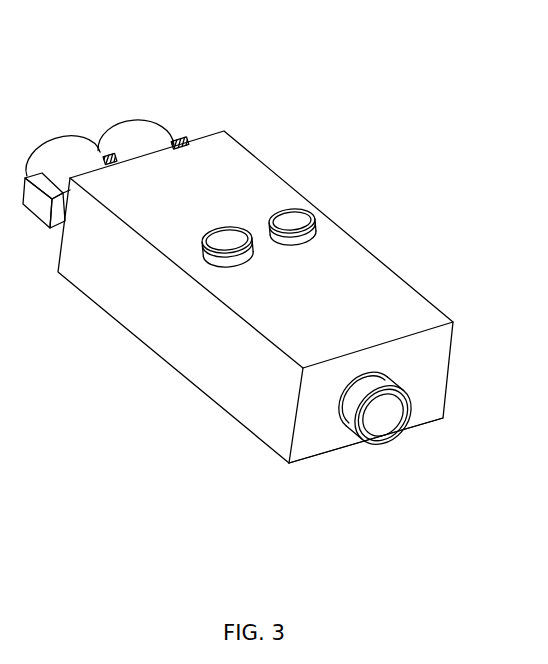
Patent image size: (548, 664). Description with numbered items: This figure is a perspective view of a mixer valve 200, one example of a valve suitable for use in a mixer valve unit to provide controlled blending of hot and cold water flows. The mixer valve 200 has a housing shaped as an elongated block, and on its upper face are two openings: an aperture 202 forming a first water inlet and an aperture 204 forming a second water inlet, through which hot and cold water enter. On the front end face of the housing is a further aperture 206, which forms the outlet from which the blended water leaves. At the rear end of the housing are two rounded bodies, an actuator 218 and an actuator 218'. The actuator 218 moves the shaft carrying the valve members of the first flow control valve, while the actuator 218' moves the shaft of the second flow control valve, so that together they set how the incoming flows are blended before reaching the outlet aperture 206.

The mixer valve 200 is at (325, 58).
The aperture 202 is at (212, 251).
The aperture 204 is at (308, 211).
The aperture 206 is at (377, 443).
The actuator 218 is at (68, 148).
The actuator 218' is at (164, 109).